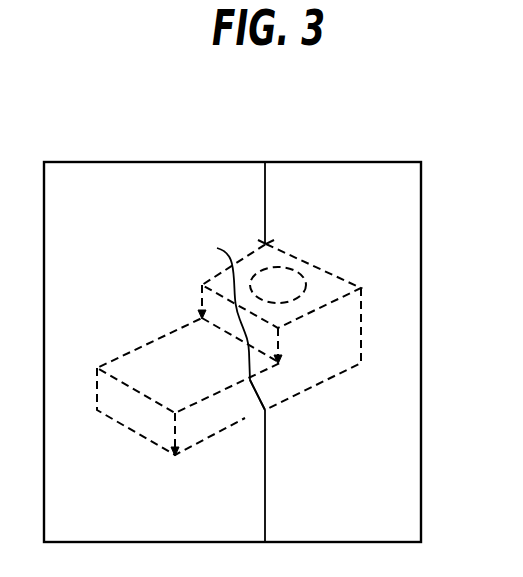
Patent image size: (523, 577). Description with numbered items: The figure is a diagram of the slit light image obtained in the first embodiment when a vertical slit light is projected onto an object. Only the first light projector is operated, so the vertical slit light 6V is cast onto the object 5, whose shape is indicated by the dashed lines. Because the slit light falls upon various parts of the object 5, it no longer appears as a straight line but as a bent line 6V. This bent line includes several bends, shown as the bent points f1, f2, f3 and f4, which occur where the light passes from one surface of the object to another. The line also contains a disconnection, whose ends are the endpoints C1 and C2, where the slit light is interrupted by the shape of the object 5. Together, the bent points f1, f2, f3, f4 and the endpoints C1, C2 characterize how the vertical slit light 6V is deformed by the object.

The vertical slit light 6V is at (265, 188).
The object 5 is at (363, 318).
The endpoint C1 is at (264, 244).
The endpoint C2 is at (217, 248).
The bent point f1 is at (201, 314).
The bent point f2 is at (250, 353).
The bent point f3 is at (250, 380).
The bent point f4 is at (266, 409).